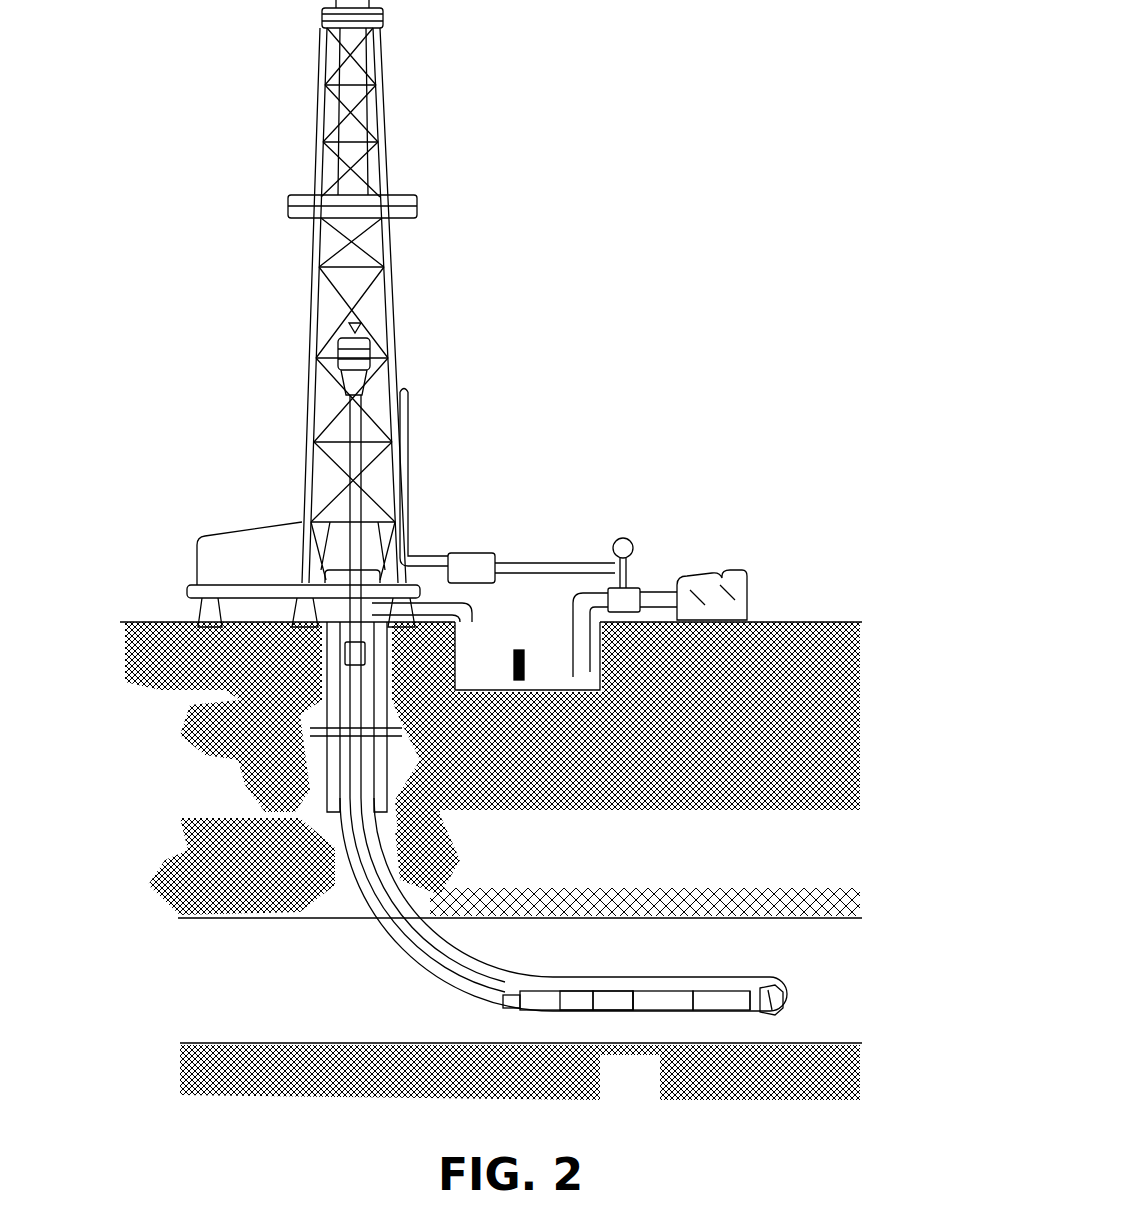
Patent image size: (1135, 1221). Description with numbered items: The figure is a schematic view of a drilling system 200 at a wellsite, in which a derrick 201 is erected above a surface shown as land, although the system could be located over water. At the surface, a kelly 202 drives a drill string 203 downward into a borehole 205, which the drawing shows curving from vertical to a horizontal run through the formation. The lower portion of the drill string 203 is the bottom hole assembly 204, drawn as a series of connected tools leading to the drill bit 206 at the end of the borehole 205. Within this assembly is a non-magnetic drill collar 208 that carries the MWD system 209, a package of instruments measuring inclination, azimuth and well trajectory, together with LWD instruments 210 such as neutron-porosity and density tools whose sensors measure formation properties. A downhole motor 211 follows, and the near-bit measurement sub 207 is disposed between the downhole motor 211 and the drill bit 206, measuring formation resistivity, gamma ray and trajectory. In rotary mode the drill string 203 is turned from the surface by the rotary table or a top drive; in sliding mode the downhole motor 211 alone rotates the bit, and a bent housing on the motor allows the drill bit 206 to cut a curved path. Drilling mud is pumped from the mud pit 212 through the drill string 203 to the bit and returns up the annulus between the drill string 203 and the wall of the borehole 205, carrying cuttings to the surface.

The drilling system 200 is at (618, 245).
The derrick 201 is at (401, 363).
The kelly 202 is at (410, 472).
The drill string 203 is at (370, 925).
The bottom hole assembly 204 is at (783, 1020).
The borehole 205 is at (423, 920).
The drill bit 206 is at (776, 988).
The near-bit measurement sub 207 is at (707, 992).
The non-magnetic drill collar 208 is at (538, 992).
The MWD system 209 is at (580, 1000).
The LWD instruments 210 is at (625, 992).
The downhole motor 211 is at (664, 1000).
The mud pit 212 is at (543, 652).